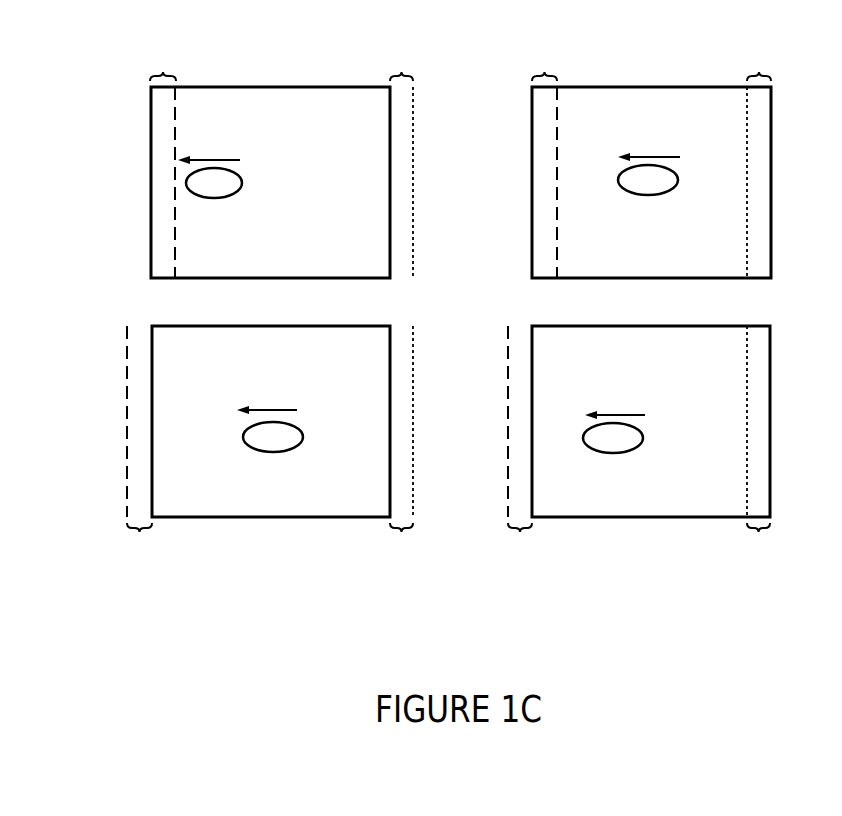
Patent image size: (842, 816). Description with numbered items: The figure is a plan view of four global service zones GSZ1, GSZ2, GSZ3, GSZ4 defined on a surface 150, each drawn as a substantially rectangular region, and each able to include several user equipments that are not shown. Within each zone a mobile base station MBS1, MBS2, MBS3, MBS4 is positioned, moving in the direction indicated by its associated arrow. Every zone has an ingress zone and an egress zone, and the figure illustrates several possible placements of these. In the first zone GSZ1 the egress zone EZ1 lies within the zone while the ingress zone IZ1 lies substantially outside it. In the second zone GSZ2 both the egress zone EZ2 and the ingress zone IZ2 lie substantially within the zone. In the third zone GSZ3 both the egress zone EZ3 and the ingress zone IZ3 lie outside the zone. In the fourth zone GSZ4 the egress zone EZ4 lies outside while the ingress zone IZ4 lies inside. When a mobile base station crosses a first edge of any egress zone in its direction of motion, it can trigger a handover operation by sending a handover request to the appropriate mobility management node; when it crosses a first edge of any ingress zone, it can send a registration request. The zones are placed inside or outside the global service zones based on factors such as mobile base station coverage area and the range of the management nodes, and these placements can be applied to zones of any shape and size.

The surface 150 is at (480, 316).
The global service zone GSZ1 is at (270, 182).
The global service zone GSZ2 is at (651, 182).
The global service zone GSZ3 is at (271, 421).
The global service zone GSZ4 is at (651, 421).
The egress zone EZ1 is at (163, 64).
The egress zone EZ2 is at (546, 64).
The egress zone EZ3 is at (140, 542).
The egress zone EZ4 is at (520, 542).
The ingress zone IZ1 is at (402, 64).
The ingress zone IZ2 is at (760, 64).
The ingress zone IZ3 is at (401, 542).
The ingress zone IZ4 is at (758, 542).
The mobile base station MBS1 is at (242, 181).
The mobile base station MBS2 is at (678, 180).
The mobile base station MBS3 is at (303, 436).
The mobile base station MBS4 is at (643, 437).